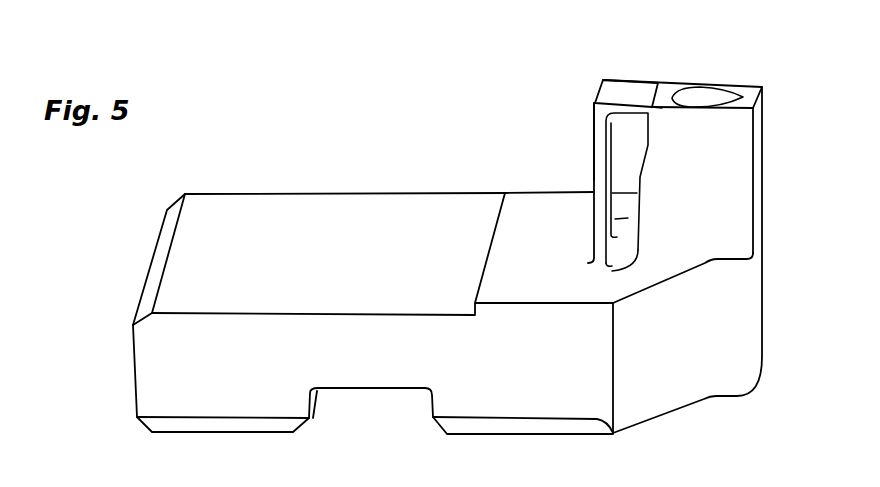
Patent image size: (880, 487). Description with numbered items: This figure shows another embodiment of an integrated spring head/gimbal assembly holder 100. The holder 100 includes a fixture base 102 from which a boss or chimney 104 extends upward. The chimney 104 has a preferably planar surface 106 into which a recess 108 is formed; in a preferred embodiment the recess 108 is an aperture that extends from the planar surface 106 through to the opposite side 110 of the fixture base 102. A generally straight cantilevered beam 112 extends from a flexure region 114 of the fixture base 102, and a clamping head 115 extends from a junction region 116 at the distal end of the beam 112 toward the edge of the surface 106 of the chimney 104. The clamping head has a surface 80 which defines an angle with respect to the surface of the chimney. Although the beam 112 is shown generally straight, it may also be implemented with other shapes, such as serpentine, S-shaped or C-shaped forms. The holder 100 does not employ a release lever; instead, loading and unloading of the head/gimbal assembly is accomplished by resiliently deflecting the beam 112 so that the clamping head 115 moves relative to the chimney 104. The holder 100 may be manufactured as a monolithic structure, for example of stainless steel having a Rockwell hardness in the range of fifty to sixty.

The holder 100 is at (468, 95).
The fixture base 102 is at (152, 367).
The chimney 104 is at (737, 207).
The planar surface 106 is at (750, 85).
The recess 108 is at (695, 95).
The opposite side 110 is at (670, 413).
The cantilevered beam 112 is at (594, 220).
The flexure region 114 is at (593, 263).
The clamping head 115 is at (628, 88).
The junction region 116 is at (605, 112).
The surface 80 is at (652, 108).